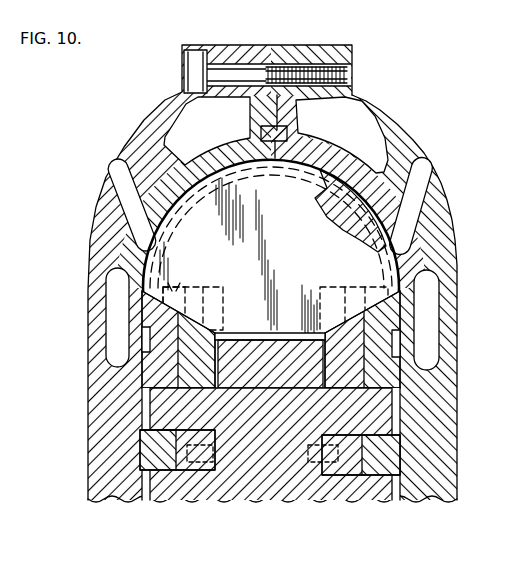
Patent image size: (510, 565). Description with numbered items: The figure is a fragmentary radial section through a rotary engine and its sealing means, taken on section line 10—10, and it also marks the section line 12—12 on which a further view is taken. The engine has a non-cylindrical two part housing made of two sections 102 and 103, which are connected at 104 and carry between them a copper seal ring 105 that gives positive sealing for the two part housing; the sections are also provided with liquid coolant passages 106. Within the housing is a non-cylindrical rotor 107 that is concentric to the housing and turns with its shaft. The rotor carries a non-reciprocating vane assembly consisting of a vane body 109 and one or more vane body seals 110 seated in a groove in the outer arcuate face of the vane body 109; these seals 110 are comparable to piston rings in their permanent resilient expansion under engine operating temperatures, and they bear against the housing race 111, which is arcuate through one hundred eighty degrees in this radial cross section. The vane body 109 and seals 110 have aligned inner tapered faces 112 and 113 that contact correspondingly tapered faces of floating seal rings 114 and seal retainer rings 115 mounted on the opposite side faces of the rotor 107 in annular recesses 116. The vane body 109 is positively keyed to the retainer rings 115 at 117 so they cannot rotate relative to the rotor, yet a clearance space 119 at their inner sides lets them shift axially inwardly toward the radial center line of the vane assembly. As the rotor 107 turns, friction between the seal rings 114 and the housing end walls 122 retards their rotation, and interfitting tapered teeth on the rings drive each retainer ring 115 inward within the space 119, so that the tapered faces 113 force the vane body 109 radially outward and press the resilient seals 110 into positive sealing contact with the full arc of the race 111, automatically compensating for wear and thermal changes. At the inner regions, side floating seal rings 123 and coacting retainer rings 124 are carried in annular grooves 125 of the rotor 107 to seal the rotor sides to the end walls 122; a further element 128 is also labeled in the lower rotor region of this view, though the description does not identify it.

The section line 10— 10 is at (268, 558).
The section line 12— 12 is at (347, 267).
The housing section 102 is at (106, 182).
The housing section 103 is at (431, 167).
The connection 104 is at (312, 73).
The copper seal ring 105 is at (261, 135).
The liquid coolant passage 106 is at (178, 128).
The rotor 107 is at (273, 476).
The vane body 109 is at (271, 247).
The vane body seal 110 is at (370, 213).
The housing race 111 is at (313, 163).
The inner tapered face 112 is at (163, 287).
The inner tapered face 113 is at (148, 331).
The floating seal ring 114 is at (152, 313).
The seal retainer ring 115 is at (190, 372).
The annular recess 116 is at (325, 386).
The key 117 is at (196, 305).
The clearance space 119 is at (323, 358).
The housing end wall 122 is at (103, 420).
The side floating seal ring 123 is at (150, 452).
The retainer ring 124 is at (186, 465).
The annular groove 125 is at (174, 433).
The pin 128 is at (230, 457).